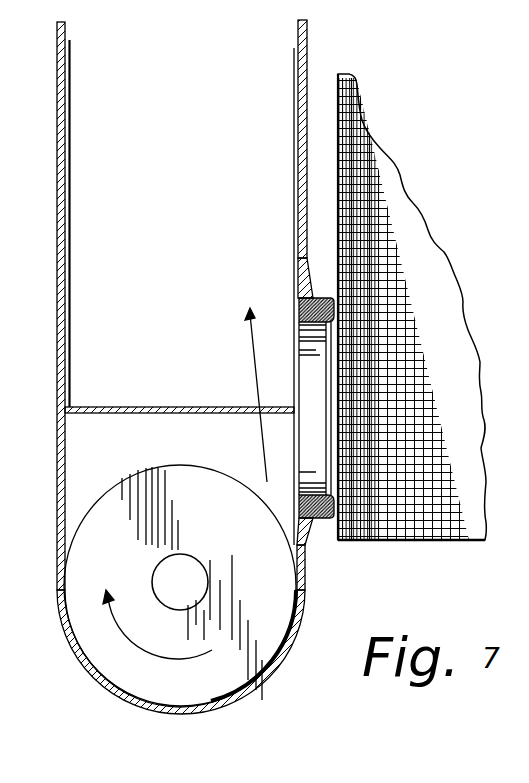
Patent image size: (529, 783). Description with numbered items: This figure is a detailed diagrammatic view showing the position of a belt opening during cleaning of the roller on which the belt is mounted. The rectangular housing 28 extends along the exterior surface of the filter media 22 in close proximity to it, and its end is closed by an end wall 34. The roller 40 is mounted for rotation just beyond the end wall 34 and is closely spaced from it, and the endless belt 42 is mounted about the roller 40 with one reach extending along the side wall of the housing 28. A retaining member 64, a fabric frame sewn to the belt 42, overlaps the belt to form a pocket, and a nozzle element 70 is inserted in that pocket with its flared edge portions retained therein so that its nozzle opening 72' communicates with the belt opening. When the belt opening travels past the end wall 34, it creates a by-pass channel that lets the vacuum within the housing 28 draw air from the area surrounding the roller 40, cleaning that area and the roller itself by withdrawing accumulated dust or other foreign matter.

The filter media 22 is at (356, 114).
The rectangular housing 28 is at (71, 153).
The end wall 34 is at (182, 407).
The roller 40 is at (288, 639).
The endless belt 42 is at (307, 45).
The retaining member 64 is at (308, 265).
The nozzle element 70 is at (318, 298).
The nozzle opening 72' is at (282, 380).